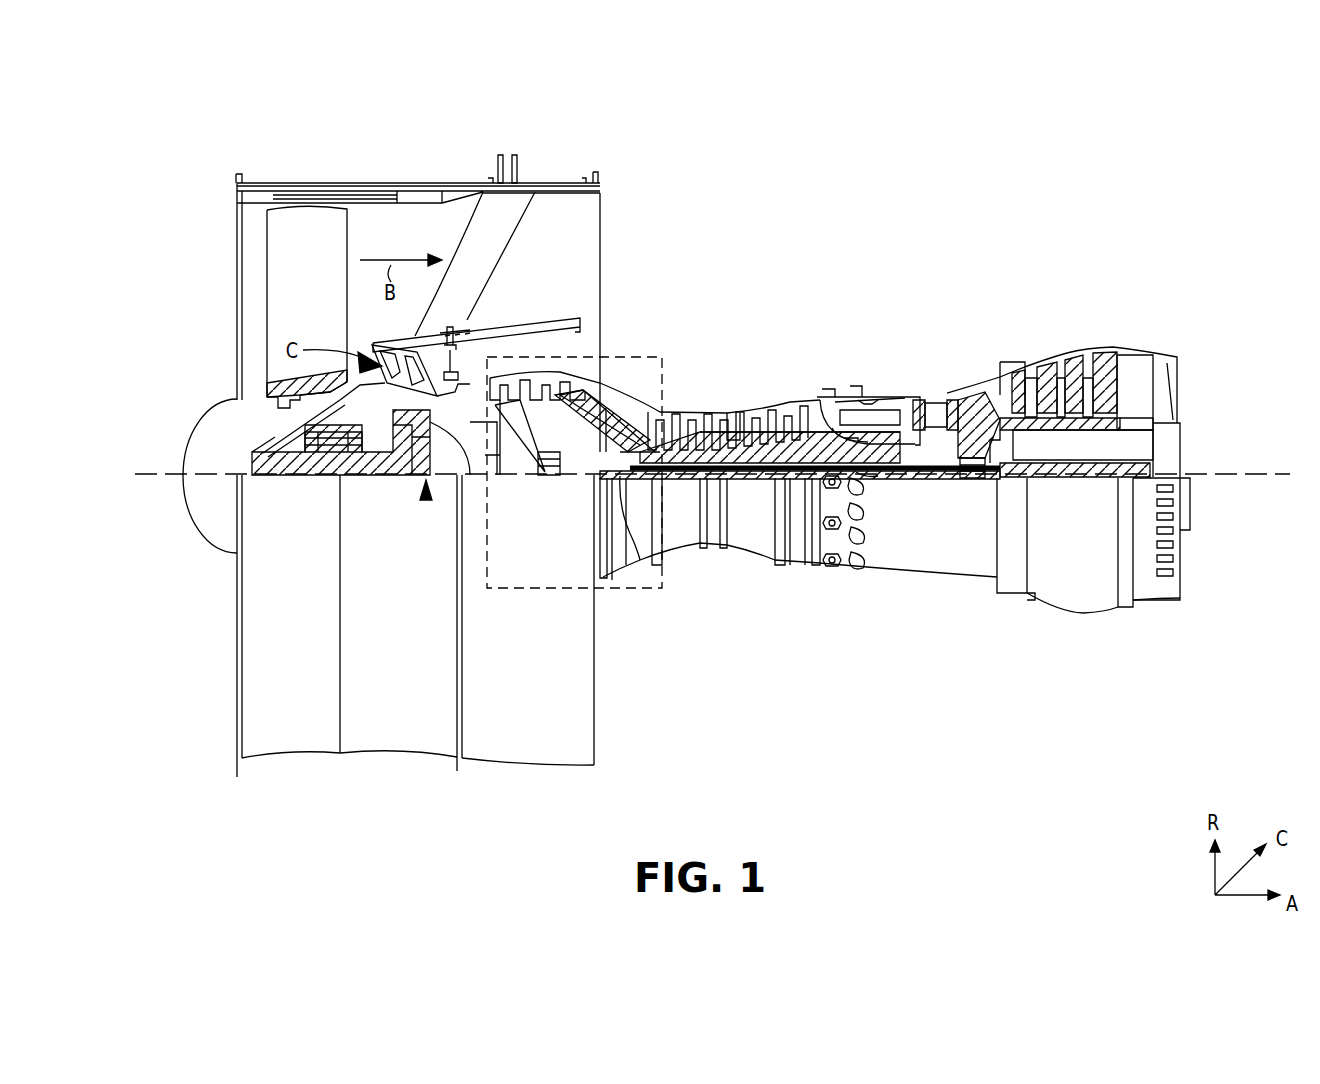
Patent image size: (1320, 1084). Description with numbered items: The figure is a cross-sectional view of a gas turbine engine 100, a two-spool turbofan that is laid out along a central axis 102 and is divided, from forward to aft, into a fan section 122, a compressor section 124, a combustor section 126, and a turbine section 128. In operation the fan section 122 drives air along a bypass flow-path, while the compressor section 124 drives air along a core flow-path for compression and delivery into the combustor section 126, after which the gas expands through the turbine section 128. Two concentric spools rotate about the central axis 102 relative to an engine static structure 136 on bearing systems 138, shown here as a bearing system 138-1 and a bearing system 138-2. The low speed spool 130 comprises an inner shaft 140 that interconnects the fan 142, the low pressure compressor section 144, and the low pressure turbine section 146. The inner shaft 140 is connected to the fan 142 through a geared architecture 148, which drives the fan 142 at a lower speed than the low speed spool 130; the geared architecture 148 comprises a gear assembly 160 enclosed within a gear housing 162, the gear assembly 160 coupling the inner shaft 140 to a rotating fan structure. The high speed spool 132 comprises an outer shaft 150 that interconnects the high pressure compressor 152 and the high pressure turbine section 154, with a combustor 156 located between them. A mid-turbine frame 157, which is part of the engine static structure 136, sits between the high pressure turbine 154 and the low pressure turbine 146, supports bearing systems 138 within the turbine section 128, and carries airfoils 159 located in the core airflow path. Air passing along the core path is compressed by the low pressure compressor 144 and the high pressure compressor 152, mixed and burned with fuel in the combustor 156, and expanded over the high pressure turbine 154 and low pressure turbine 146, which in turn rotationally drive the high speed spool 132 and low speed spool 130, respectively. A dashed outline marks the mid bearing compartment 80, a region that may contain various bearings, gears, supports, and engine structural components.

The mid bearing compartment 80 is at (525, 590).
The gas turbine engine 100 is at (726, 183).
The central axis 102 is at (151, 470).
The fan section 122 is at (460, 160).
The compressor section 124 is at (470, 287).
The combustor section 126 is at (921, 288).
The turbine section 128 is at (1123, 288).
The low speed spool 130 is at (758, 495).
The high speed spool 132 is at (795, 440).
The engine static structure 136 is at (798, 552).
The bearing system 138 is at (972, 478).
The bearing system 138-1 is at (316, 458).
The bearing system 138-2 is at (546, 457).
The inner shaft 140 is at (627, 535).
The fan 142 is at (307, 307).
The low pressure compressor section 144 is at (540, 376).
The low pressure turbine section 146 is at (1060, 368).
The geared architecture 148 is at (426, 498).
The outer shaft 150 is at (872, 467).
The high pressure compressor 152 is at (733, 410).
The high pressure turbine section 154 is at (935, 396).
The combustor 156 is at (866, 420).
The mid-turbine frame 157 is at (976, 410).
The airfoils 159 is at (978, 410).
The gear assembly 160 is at (424, 466).
The gear housing 162 is at (432, 424).